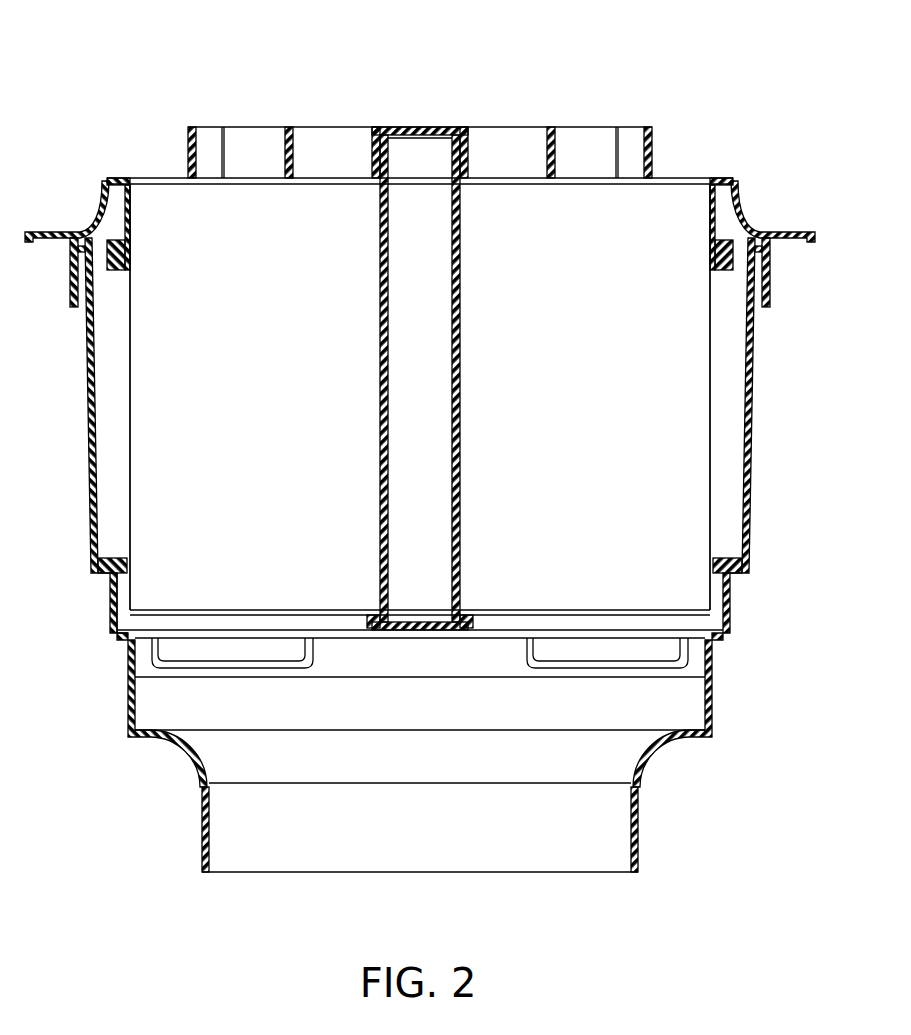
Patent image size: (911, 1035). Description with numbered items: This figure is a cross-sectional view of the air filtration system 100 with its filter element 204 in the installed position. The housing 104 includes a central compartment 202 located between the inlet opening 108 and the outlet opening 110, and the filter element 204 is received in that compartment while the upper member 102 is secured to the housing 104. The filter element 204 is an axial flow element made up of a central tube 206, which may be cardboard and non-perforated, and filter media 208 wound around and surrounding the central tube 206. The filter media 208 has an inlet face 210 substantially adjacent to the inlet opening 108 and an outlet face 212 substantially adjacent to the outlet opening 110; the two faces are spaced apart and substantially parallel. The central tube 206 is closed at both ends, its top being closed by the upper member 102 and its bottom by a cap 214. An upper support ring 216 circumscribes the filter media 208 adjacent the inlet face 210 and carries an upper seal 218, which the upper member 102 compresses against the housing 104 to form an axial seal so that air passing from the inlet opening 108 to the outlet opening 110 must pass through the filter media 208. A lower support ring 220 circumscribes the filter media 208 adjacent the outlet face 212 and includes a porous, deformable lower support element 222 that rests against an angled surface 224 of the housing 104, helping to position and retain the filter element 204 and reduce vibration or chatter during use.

The air filtration system 100 is at (90, 65).
The upper member 102 is at (100, 207).
The housing 104 is at (93, 397).
The inlet opening 108 is at (235, 116).
The outlet opening 110 is at (273, 882).
The central compartment 202 is at (727, 415).
The filter element 204 is at (665, 215).
The central tube 206 is at (458, 147).
The filter media 208 is at (680, 347).
The inlet face 210 is at (167, 183).
The outlet face 212 is at (643, 612).
The cap 214 is at (452, 630).
The upper support ring 216 is at (715, 212).
The upper seal 218 is at (770, 253).
The lower support ring 220 is at (125, 588).
The lower support element 222 is at (105, 577).
The angled surface 224 is at (737, 577).